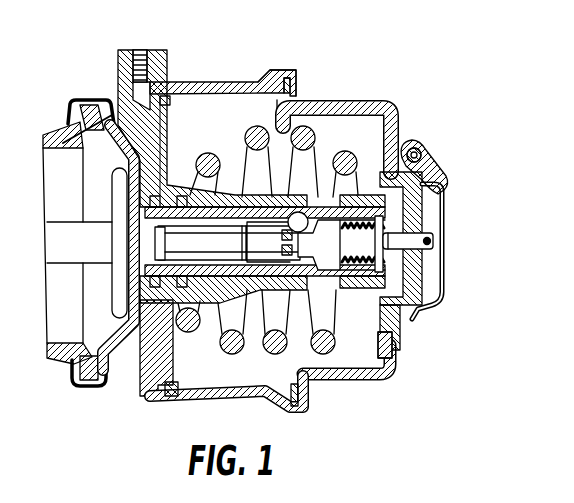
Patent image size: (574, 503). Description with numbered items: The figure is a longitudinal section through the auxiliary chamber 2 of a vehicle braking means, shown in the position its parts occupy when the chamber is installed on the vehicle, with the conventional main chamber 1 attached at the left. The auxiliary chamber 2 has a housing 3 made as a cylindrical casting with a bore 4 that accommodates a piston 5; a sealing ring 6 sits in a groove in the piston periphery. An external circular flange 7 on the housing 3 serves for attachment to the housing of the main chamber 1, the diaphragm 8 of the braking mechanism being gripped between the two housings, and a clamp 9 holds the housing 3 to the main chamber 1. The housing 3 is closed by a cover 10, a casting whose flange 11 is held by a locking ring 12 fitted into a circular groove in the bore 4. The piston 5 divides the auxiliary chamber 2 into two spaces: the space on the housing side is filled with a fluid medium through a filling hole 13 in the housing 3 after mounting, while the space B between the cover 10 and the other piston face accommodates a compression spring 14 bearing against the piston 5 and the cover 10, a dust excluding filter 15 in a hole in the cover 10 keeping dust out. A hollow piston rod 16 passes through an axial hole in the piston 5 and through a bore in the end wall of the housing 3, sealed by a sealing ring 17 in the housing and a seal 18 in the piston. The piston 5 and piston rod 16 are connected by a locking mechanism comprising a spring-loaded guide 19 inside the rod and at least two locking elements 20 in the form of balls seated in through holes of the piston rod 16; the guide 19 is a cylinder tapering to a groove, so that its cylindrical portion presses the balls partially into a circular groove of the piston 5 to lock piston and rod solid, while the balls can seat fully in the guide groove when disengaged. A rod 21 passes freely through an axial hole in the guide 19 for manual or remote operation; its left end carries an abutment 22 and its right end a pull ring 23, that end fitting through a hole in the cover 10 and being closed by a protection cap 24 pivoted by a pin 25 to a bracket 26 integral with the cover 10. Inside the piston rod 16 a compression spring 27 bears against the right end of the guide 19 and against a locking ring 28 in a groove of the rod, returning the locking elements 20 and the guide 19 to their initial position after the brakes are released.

The main chamber 1 is at (53, 143).
The auxiliary chamber 2 is at (276, 68).
The housing 3 is at (121, 67).
The bore 4 is at (207, 96).
The piston 5 is at (178, 366).
The sealing ring 6 is at (170, 398).
The external circular flange 7 is at (113, 360).
The diaphragm 8 is at (88, 381).
The clamp 9 is at (90, 101).
The cover 10 is at (391, 124).
The flange 11 is at (285, 386).
The locking ring 12 is at (292, 84).
The filling hole 13 is at (142, 52).
The compression spring 14 is at (312, 141).
The dust excluding filter 15 is at (379, 349).
The hollow piston rod 16 is at (124, 275).
The sealing ring 17 is at (124, 206).
The seal 18 is at (197, 311).
The spring-loaded guide 19 is at (298, 293).
The locking elements 20 is at (303, 212).
The rod 21 is at (255, 295).
The abutment 22 is at (130, 244).
The pull ring 23 is at (437, 212).
The protection cap 24 is at (444, 265).
The pin 25 is at (428, 158).
The bracket 26 is at (411, 146).
The compression spring 27 is at (360, 282).
The locking ring 28 is at (428, 258).
The space B is at (365, 382).